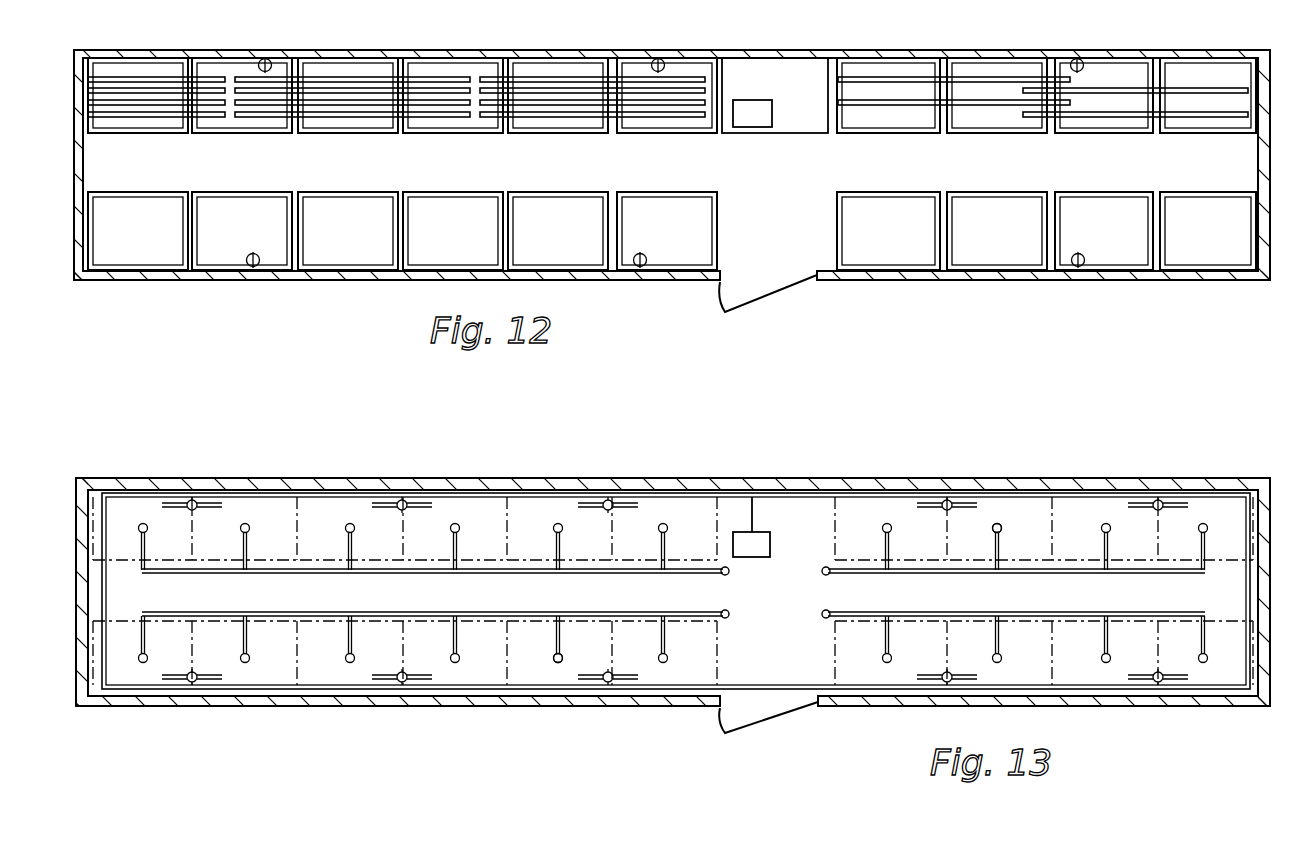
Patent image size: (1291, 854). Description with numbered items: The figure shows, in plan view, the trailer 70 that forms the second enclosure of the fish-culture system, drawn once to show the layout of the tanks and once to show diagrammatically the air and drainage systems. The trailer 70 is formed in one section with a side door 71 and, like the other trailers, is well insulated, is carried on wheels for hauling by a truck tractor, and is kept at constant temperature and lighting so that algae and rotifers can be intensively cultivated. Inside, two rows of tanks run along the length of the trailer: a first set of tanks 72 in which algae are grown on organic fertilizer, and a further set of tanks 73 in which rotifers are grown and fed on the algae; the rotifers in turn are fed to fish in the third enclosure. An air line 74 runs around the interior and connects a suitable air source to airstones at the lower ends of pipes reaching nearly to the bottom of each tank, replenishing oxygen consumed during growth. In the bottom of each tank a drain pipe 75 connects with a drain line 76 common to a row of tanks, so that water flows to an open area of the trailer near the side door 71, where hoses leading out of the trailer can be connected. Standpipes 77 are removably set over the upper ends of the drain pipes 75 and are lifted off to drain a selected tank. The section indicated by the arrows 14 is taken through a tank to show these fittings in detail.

In FIG. 12, the trailer 70 is at (774, 48).
In FIG. 13, the trailer 70 is at (791, 477).
In FIG. 12, the side door 71 is at (777, 297).
In FIG. 13, the side door 71 is at (768, 717).
In FIG. 12, the first set of tanks 72 is at (547, 192).
In FIG. 12, the right compartments 73 is at (965, 134).
In FIG. 13, the air line 74 is at (345, 497).
In FIG. 13, the drain pipe 75 is at (458, 540).
In FIG. 13, the drain line 76 is at (327, 612).
In FIG. 13, the standpipe 77 is at (561, 660).
In FIG. 13, the section line 14- 14 is at (1258, 405).